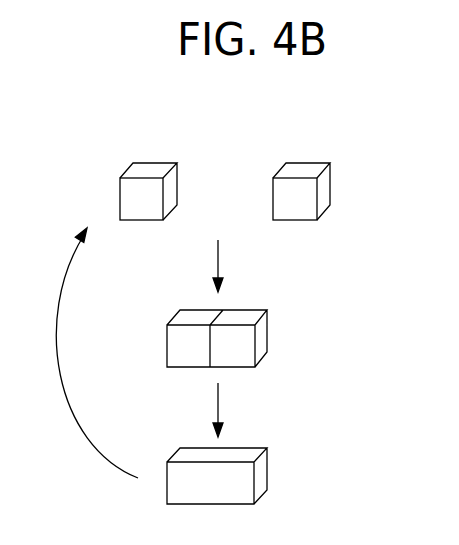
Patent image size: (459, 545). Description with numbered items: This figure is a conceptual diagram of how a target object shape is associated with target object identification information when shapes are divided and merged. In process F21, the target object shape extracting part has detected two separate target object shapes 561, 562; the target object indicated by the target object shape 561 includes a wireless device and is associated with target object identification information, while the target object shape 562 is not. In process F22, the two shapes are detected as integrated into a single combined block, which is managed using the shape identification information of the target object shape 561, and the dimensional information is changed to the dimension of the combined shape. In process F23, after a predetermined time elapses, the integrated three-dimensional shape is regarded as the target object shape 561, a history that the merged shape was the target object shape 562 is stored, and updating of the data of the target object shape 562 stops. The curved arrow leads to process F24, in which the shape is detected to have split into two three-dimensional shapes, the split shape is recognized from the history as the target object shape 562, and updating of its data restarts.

The target object shape 561 is at (160, 163).
The target object shape 562 is at (310, 163).
The process F21 is at (335, 168).
The process F22 is at (192, 310).
The process F23 is at (240, 447).
The process F24 is at (119, 168).